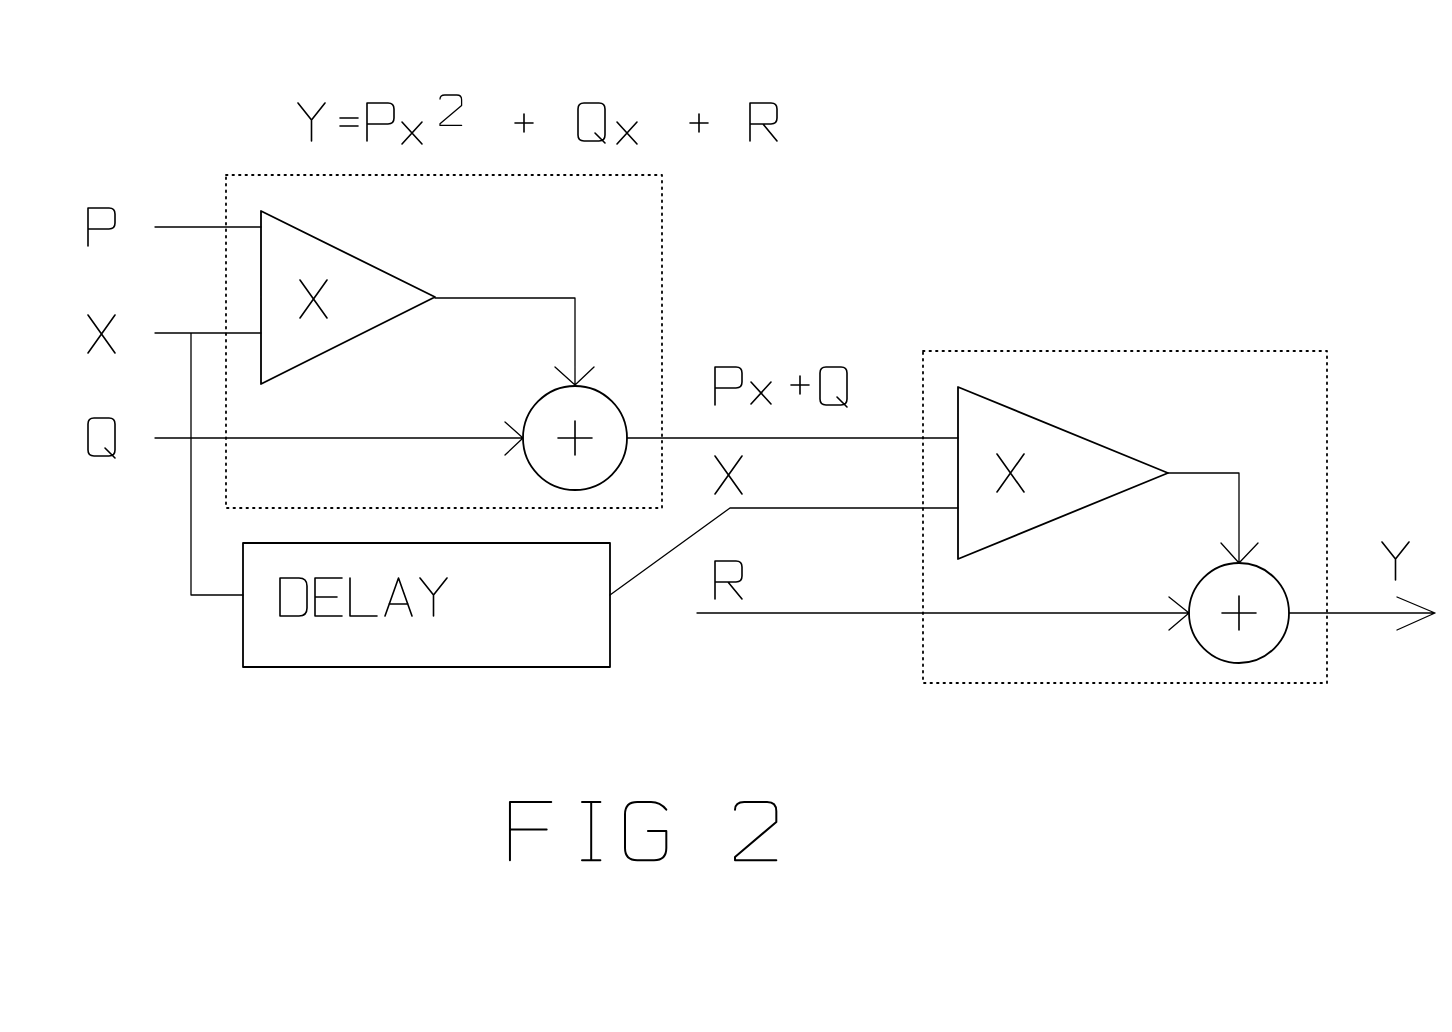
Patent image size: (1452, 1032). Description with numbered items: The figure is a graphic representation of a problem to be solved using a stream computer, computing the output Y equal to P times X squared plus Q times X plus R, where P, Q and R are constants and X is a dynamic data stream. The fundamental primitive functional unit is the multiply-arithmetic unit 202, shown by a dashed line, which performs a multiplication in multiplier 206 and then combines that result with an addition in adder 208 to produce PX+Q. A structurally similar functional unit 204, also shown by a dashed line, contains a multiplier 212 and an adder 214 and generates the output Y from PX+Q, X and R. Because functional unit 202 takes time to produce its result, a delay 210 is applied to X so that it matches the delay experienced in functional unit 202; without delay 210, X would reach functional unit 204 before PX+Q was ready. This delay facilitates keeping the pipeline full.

The multiply-arithmetic unit 202 is at (680, 282).
The functional unit 204 is at (1125, 490).
The multiplier 206 is at (348, 288).
The adder 208 is at (518, 407).
The delay 210 is at (426, 605).
The multiplier 212 is at (1063, 463).
The adder 214 is at (1188, 632).